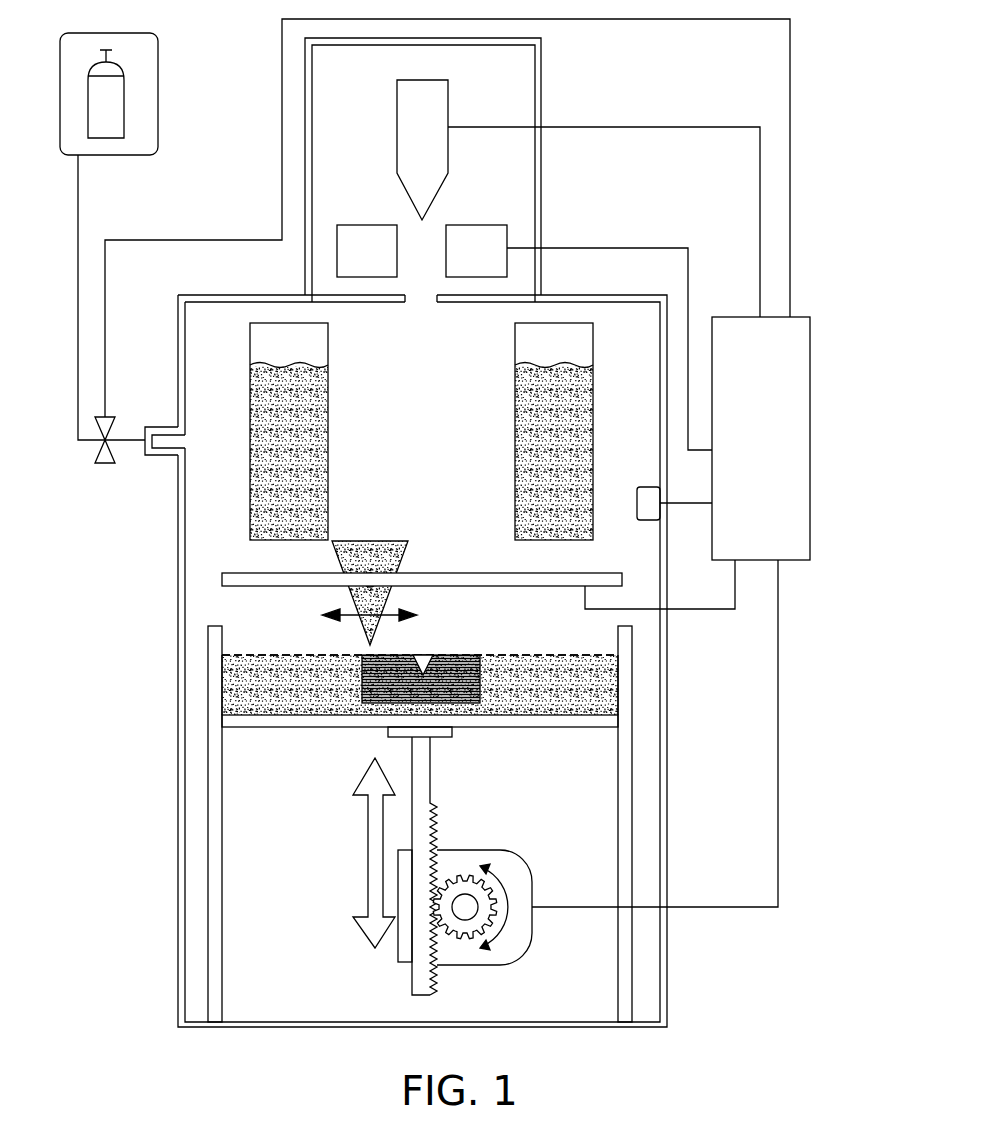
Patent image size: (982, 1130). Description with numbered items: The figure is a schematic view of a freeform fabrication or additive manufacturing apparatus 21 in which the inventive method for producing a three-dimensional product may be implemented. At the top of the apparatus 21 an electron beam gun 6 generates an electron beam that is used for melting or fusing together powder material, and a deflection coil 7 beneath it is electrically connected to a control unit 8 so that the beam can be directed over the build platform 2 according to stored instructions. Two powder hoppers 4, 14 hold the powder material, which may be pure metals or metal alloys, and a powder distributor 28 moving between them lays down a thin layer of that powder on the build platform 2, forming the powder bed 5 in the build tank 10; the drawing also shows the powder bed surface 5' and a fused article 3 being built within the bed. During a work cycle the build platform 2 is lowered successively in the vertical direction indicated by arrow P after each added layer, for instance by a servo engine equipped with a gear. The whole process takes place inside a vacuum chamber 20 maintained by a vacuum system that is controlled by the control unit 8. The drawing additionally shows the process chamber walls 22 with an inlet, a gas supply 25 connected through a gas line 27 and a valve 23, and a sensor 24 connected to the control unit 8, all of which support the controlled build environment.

The build platform 2 is at (288, 722).
The component / part being built 3 is at (478, 655).
The powder hopper 4 is at (328, 435).
The powder bed 5 is at (420, 658).
The powder bed surface 5' is at (364, 626).
The electron beam gun 6 is at (429, 138).
The deflection coil 7 is at (483, 262).
The control unit 8 is at (768, 456).
The build tank 10 is at (213, 872).
The powder hopper 14 is at (515, 435).
The vacuum chamber 20 is at (665, 773).
The additive manufacturing apparatus 21 is at (262, 58).
The process chamber 22 is at (200, 447).
The valve 23 is at (105, 465).
The sensor 24 is at (640, 520).
The gas supply 25 is at (163, 95).
The gas line 27 is at (78, 212).
The powder distributor 28 is at (405, 557).
The arrow P is at (367, 870).